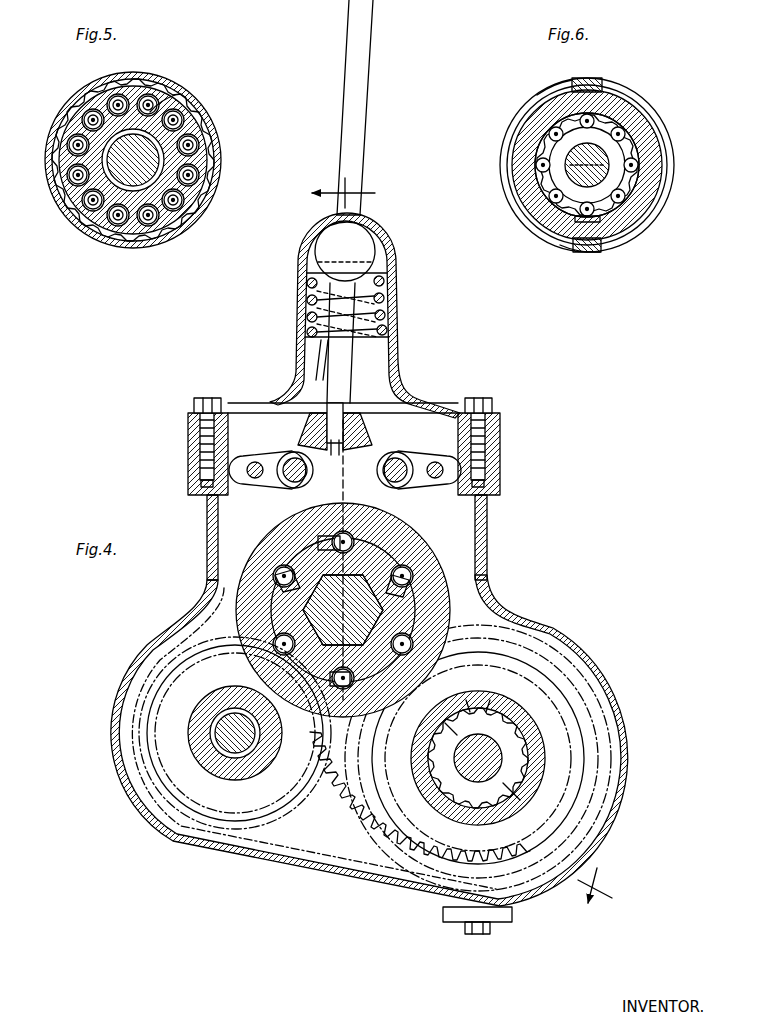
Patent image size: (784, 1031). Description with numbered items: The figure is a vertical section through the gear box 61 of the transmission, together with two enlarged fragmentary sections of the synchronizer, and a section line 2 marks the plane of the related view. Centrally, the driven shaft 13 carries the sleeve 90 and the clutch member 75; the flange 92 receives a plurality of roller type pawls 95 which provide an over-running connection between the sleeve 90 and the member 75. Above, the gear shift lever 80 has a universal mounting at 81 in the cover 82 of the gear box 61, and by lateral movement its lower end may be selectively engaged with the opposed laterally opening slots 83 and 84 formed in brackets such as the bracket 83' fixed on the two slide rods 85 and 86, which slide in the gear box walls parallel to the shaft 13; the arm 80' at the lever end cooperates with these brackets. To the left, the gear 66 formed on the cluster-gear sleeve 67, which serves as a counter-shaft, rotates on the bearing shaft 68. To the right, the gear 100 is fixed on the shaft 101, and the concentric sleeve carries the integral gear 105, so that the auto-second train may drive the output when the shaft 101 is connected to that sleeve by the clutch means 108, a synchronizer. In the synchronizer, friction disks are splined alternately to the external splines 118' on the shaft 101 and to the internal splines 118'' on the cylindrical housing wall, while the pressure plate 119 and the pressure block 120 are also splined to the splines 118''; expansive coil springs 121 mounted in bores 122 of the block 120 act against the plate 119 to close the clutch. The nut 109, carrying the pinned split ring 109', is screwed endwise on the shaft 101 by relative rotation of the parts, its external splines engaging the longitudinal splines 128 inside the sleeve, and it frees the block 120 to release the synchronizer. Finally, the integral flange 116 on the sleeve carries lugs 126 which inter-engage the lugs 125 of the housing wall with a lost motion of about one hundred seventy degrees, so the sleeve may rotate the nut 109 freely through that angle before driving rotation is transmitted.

In FIG. 4, the section line 2- 2 is at (471, 540).
In FIG. 4, the driven shaft 13 is at (320, 605).
In FIG. 4, the gear box 61 is at (497, 607).
In FIG. 4, the gear 66 is at (297, 800).
In FIG. 4, the cluster-gear sleeve 67 is at (185, 749).
In FIG. 4, the bearing shaft 68 is at (232, 748).
In FIG. 4, the clutch member 75 is at (288, 590).
In FIG. 4, the gear shift lever 80 is at (374, 107).
In FIG. 4, the arm 80' is at (294, 427).
In FIG. 4, the universal mounting 81 is at (370, 228).
In FIG. 4, the cover 82 is at (399, 374).
In FIG. 4, the slot 83 is at (347, 339).
In FIG. 4, the bracket 83' is at (382, 427).
In FIG. 4, the slot 84 is at (336, 455).
In FIG. 4, the slide rod 85 is at (402, 490).
In FIG. 4, the slide rod 86 is at (290, 492).
In FIG. 4, the sleeve 90 is at (405, 530).
In FIG. 4, the flange 92 is at (420, 600).
In FIG. 4, the roller type pawls 95 is at (285, 567).
In FIG. 4, the gear 100 is at (430, 832).
In FIG. 5, the shaft 101 is at (120, 168).
In FIG. 6, the shaft 101 is at (580, 172).
In FIG. 4, the shaft 101 is at (490, 758).
In FIG. 4, the gear 105 is at (440, 840).
In FIG. 5, the clutch means 108 is at (213, 117).
In FIG. 6, the clutch means 108 is at (596, 247).
In FIG. 4, the nut 109 is at (551, 779).
In FIG. 6, the split ring 109' is at (636, 233).
In FIG. 6, the flange 116 is at (658, 152).
In FIG. 6, the external splines 118' is at (644, 185).
In FIG. 4, the external splines 118' is at (404, 767).
In FIG. 5, the internal splines 118'' is at (191, 86).
In FIG. 5, the pressure plate 119 is at (200, 190).
In FIG. 6, the pressure plate 119 is at (640, 135).
In FIG. 5, the pressure block 120 is at (196, 143).
In FIG. 5, the coil springs 121 is at (190, 170).
In FIG. 5, the bores 122 is at (193, 180).
In FIG. 6, the lugs 125 is at (598, 88).
In FIG. 6, the lugs 126 is at (556, 84).
In FIG. 6, the longitudinal splines 128 is at (628, 145).
In FIG. 4, the longitudinal splines 128 is at (530, 720).